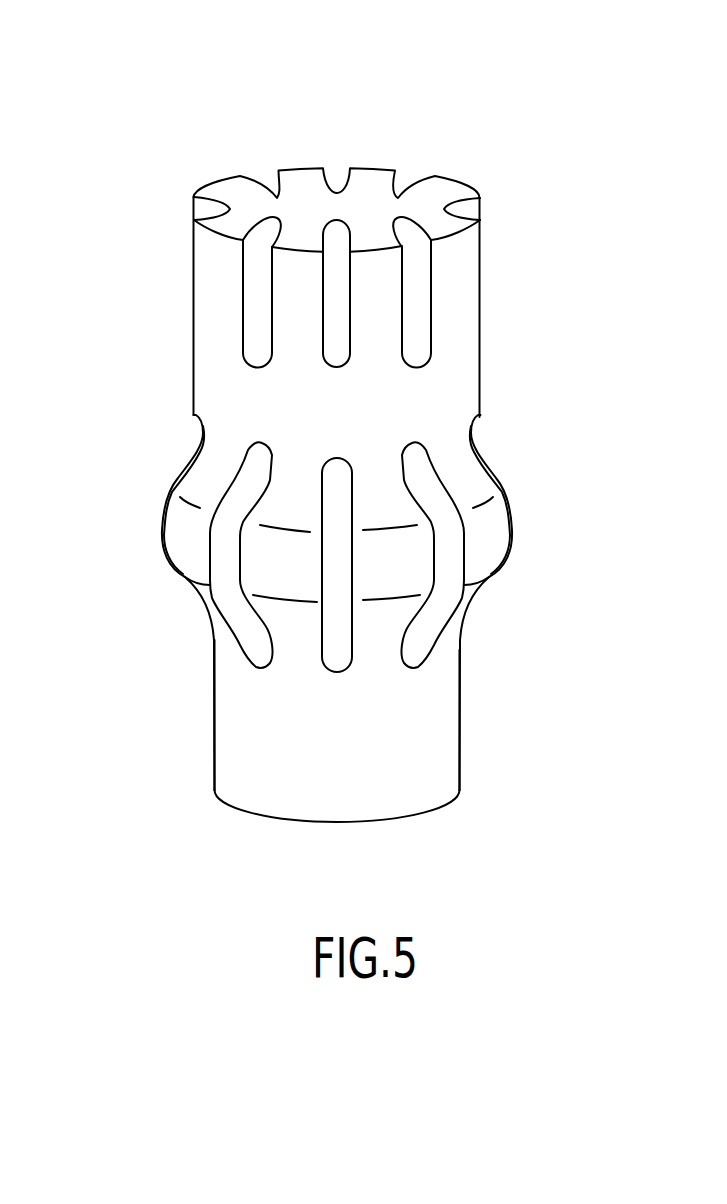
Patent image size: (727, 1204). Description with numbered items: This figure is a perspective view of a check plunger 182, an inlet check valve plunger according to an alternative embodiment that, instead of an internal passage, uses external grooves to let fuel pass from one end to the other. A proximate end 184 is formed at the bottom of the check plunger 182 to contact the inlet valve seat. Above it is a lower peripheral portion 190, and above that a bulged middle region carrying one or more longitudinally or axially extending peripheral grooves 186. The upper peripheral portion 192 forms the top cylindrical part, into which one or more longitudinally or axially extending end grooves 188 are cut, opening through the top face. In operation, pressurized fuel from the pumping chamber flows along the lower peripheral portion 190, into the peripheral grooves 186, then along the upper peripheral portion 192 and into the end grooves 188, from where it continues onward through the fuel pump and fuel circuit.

The check plunger 182 is at (183, 138).
The proximate end 184 is at (285, 820).
The peripheral grooves 186 is at (333, 573).
The end grooves 188 is at (337, 332).
The lower peripheral portion 190 is at (213, 735).
The upper peripheral portion 192 is at (193, 358).